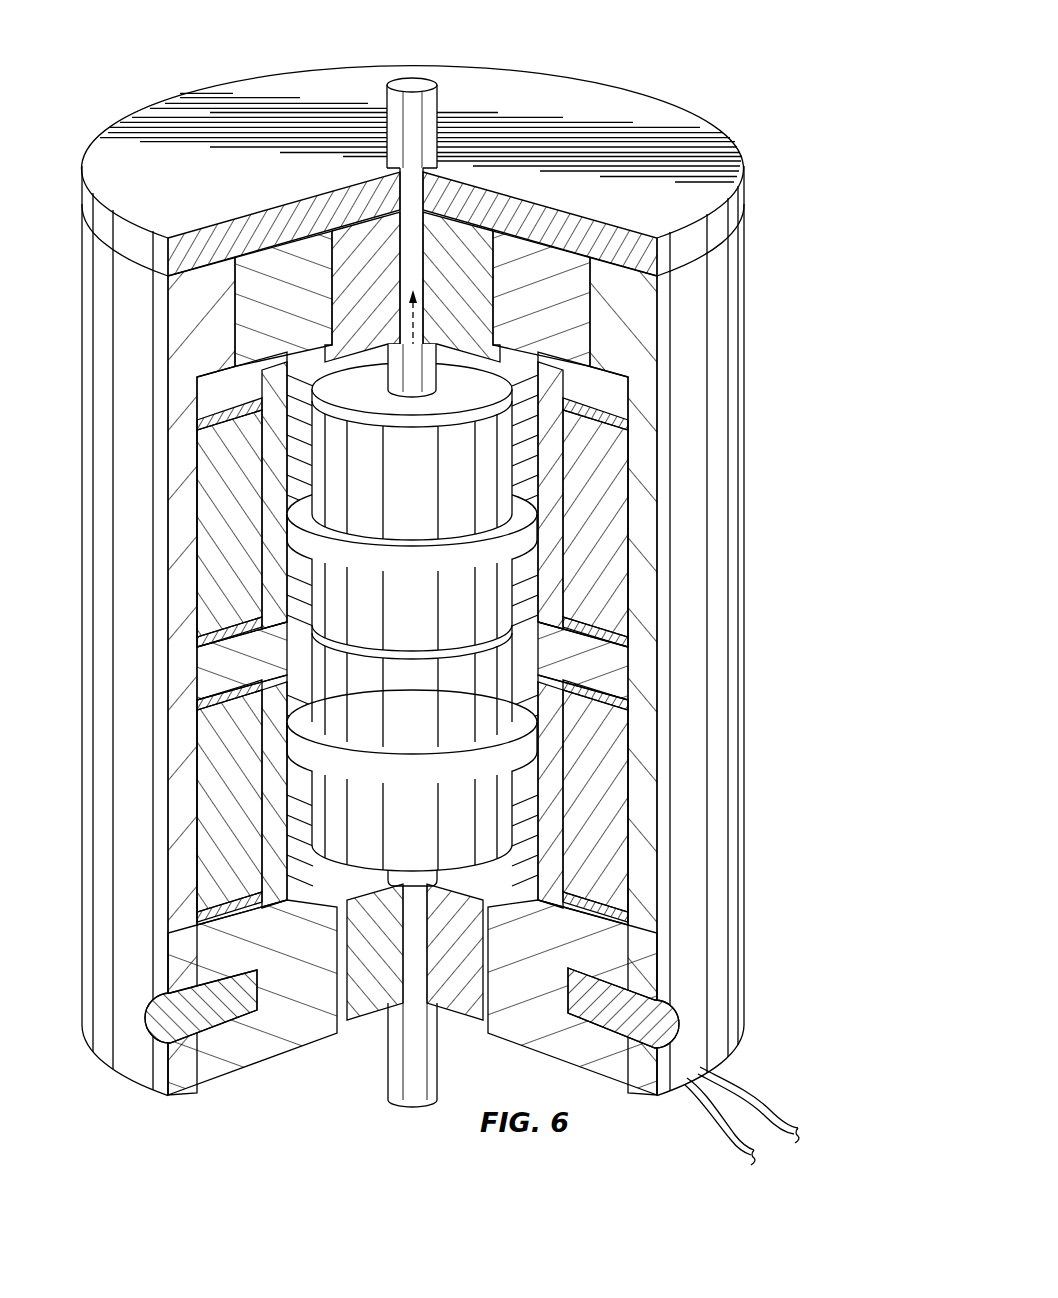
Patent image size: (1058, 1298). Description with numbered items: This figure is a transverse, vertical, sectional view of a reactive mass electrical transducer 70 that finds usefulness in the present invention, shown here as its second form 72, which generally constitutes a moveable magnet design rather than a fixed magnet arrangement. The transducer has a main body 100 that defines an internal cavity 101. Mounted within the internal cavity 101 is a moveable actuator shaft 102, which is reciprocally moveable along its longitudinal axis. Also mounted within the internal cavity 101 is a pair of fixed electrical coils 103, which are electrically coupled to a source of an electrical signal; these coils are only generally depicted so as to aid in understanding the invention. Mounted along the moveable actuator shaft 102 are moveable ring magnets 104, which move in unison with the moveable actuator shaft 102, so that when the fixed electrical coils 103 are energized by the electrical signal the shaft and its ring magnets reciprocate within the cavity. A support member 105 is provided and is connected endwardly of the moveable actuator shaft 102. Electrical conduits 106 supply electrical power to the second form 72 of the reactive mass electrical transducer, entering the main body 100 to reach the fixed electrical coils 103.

The reactive mass electrical transducer 70 is at (738, 110).
The second form of the reactive mass electrical transducer 72 is at (757, 256).
The main body 100 is at (722, 412).
The internal cavity 101 is at (257, 312).
The moveable actuator shaft 102 is at (405, 398).
The fixed electrical coils 103 is at (240, 560).
The moveable ring magnets 104 is at (430, 494).
The support member 105 is at (201, 201).
The electrical conduits 106 is at (727, 1093).